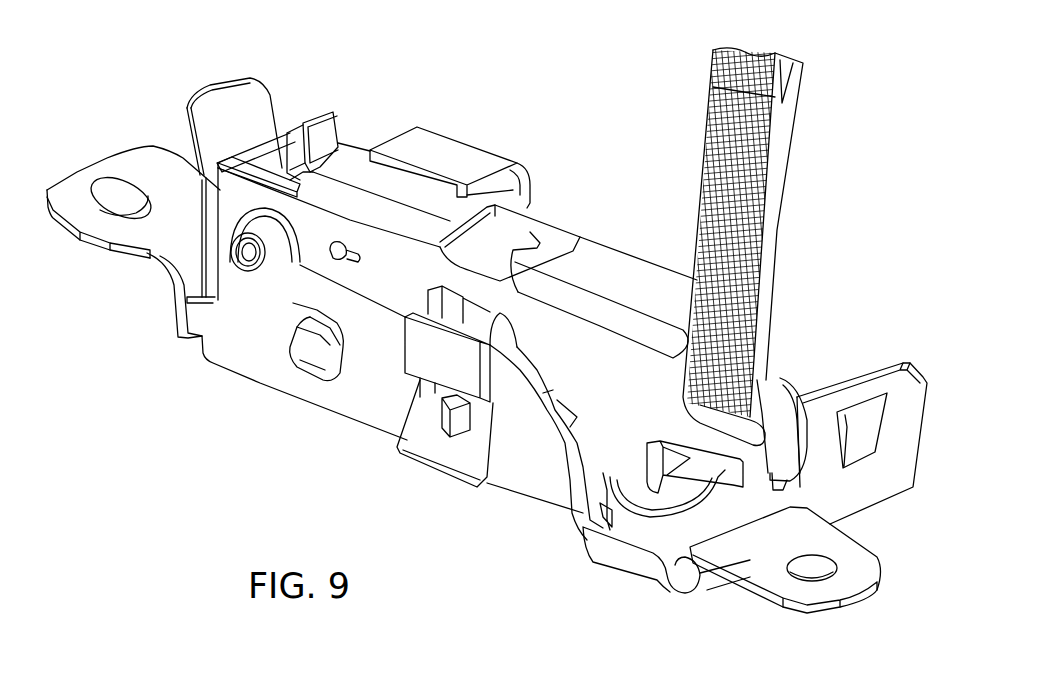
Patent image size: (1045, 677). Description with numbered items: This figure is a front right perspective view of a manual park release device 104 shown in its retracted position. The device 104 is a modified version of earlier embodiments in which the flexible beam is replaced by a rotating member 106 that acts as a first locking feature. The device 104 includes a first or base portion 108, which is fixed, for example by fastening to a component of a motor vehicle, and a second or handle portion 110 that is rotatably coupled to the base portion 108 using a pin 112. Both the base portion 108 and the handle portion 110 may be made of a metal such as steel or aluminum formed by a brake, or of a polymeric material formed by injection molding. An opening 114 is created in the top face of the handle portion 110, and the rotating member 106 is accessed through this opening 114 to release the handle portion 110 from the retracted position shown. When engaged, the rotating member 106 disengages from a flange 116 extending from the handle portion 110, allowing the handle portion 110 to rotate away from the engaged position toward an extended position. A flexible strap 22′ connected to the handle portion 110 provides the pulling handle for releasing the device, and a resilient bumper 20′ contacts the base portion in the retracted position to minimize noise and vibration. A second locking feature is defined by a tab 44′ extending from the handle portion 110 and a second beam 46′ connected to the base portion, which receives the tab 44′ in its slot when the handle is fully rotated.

The resilient material bumper 20′ is at (697, 498).
The strap 22′ is at (713, 78).
The tab 44′ is at (323, 123).
The second beam 46′ is at (223, 105).
The manual park release device 104 is at (863, 139).
The rotating member 106 is at (437, 443).
The base portion 108 is at (540, 472).
The handle portion 110 is at (640, 422).
The pin 112 is at (240, 254).
The opening 114 is at (520, 287).
The flange 116 is at (423, 400).